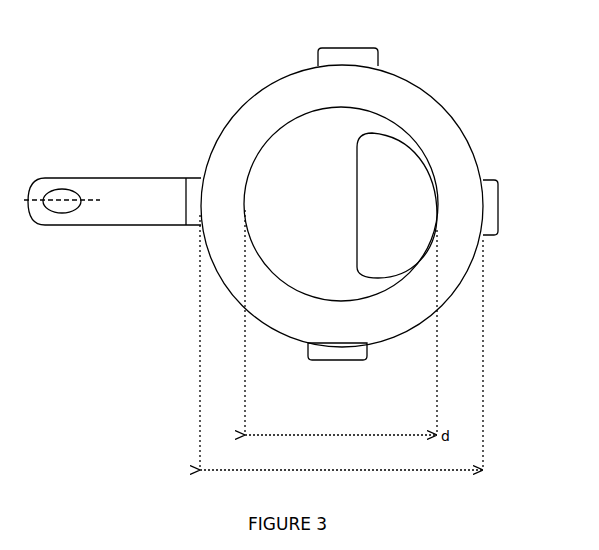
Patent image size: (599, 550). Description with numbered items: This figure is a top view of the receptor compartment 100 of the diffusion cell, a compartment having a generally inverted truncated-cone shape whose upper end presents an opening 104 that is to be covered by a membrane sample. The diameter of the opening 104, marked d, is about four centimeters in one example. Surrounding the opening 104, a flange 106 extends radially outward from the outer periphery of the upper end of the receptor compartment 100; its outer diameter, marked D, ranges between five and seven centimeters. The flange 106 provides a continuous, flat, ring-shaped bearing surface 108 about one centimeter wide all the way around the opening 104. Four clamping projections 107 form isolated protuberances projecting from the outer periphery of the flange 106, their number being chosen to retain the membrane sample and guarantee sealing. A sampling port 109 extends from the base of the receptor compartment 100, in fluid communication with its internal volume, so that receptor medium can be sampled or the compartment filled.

The receptor compartment 100 is at (529, 348).
The opening 104 is at (328, 213).
The flange 106 is at (237, 106).
The clamping projections 107 is at (353, 46).
The bearing surface 108 is at (434, 126).
The sampling port 109 is at (114, 192).